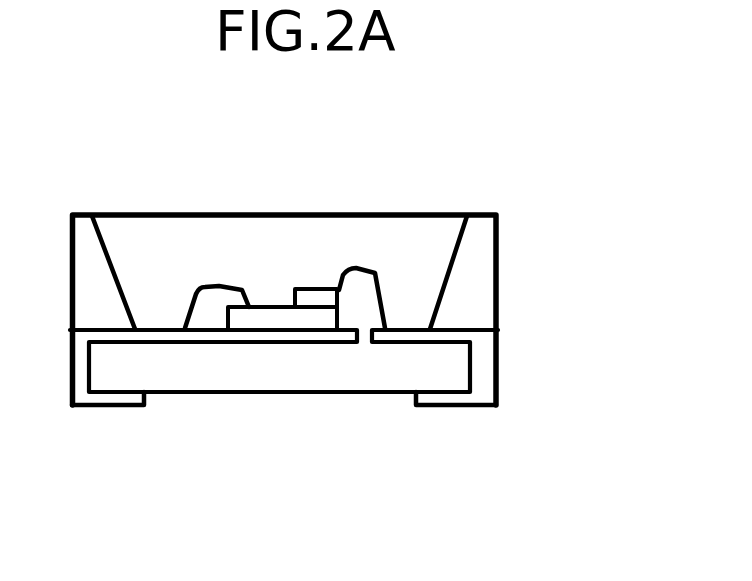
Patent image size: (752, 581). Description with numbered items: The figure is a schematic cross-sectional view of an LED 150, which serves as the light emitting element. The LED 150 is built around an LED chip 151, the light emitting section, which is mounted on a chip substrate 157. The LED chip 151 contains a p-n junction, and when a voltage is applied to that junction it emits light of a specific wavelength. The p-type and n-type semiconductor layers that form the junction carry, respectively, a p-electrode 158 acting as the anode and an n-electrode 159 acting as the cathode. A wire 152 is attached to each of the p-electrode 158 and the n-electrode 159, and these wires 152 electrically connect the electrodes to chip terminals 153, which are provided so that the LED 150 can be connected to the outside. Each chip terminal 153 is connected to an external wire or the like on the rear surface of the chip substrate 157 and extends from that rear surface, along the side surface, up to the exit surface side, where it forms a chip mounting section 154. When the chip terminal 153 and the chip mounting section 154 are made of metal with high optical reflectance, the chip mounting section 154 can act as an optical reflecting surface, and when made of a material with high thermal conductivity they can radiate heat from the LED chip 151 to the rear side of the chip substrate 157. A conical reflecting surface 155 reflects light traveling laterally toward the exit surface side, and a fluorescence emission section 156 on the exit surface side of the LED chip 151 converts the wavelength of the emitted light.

The LED 150 is at (340, 488).
The LED chip 151 is at (288, 313).
The wire 152 is at (205, 288).
The chip terminal 153 is at (103, 408).
The chip mounting section 154 is at (230, 333).
The conical reflecting surface 155 is at (81, 237).
The fluorescence emission section 156 is at (143, 262).
The chip substrate 157 is at (363, 360).
The p-electrode 158 is at (327, 280).
The n-electrode 159 is at (257, 312).